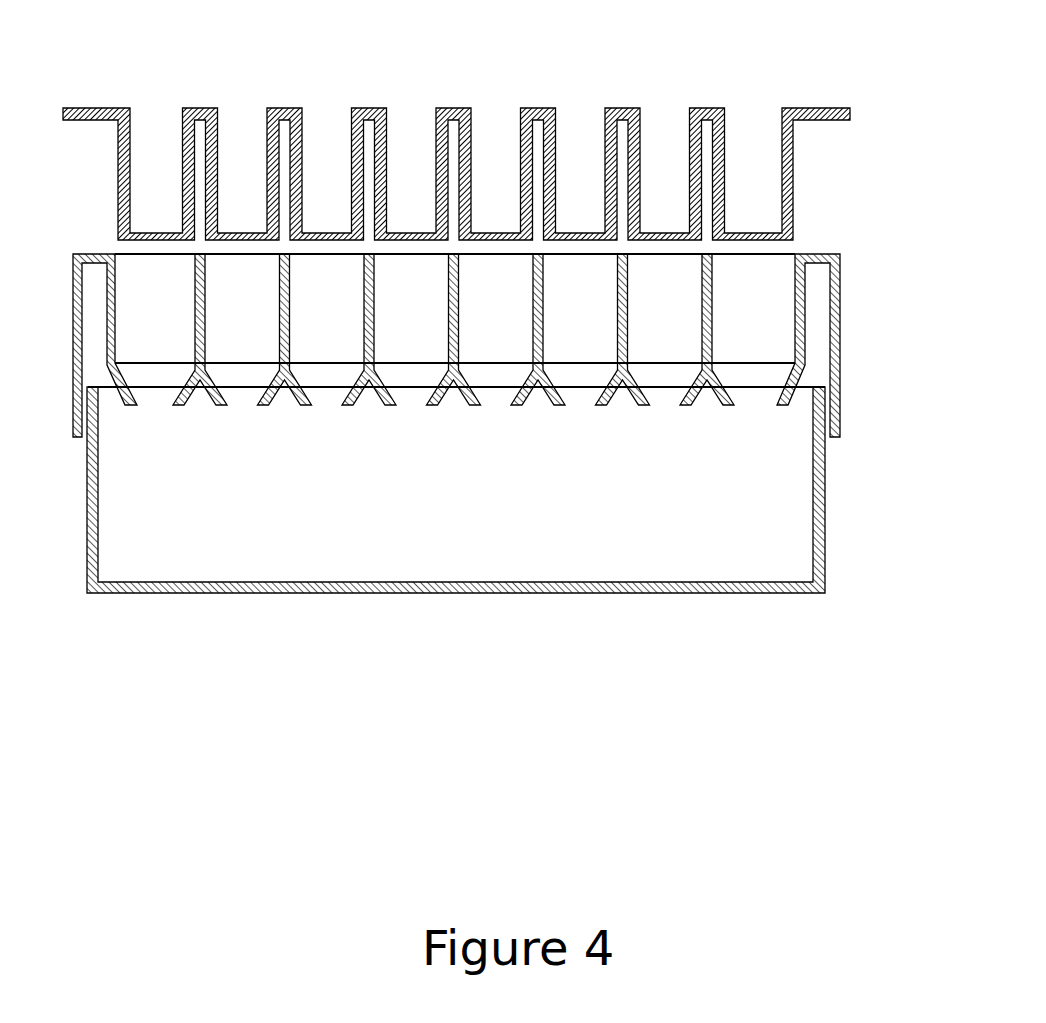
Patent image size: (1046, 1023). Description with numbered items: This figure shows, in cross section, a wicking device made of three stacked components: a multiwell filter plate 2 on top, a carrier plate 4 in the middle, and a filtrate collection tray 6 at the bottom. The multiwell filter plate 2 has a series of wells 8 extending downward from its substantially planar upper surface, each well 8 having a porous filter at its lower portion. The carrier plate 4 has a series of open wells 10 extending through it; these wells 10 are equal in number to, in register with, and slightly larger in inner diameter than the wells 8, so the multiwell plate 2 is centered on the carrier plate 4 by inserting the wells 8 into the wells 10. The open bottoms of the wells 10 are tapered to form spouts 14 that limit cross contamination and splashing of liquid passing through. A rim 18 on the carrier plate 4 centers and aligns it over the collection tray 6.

The multiwell filter plate 2 is at (827, 108).
The carrier plate 4 is at (832, 252).
The filtrate collection tray 6 is at (820, 504).
The well 8 is at (747, 128).
The open well 10 is at (777, 288).
The spout 14 is at (665, 410).
The rim 18 is at (838, 382).